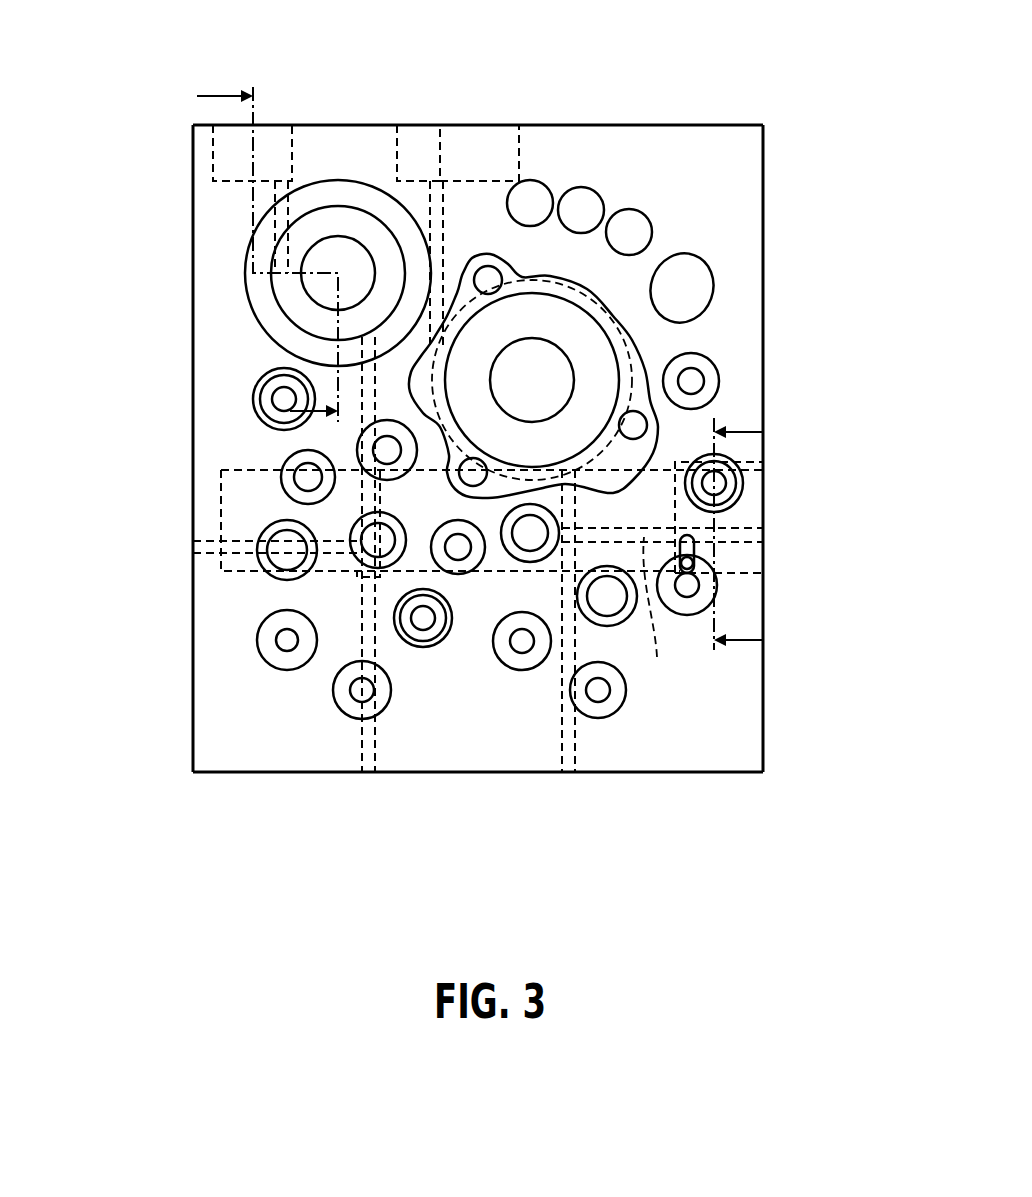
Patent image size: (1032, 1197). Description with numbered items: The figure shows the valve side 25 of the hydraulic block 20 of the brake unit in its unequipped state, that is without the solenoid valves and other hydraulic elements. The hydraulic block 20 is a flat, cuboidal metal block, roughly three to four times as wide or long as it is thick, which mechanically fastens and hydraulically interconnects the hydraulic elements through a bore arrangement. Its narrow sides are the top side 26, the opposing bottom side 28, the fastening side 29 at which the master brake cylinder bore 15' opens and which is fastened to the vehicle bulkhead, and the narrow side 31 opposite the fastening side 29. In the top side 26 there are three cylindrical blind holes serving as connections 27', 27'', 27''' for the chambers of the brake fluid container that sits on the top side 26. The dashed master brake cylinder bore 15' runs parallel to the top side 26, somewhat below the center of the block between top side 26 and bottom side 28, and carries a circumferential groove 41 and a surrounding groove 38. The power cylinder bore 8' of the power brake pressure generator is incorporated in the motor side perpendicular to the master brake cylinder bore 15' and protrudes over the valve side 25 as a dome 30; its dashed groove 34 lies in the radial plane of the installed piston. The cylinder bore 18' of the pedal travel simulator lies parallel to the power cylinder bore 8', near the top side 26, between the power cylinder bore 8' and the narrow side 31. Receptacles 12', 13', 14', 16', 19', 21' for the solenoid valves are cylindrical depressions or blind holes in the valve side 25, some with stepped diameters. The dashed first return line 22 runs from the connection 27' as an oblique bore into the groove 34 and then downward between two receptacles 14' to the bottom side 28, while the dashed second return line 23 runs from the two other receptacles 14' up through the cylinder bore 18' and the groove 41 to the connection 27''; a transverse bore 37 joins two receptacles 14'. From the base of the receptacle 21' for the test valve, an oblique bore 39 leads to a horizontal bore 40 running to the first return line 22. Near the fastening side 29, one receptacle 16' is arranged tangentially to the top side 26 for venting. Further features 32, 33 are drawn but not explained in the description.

The hydraulic block 20 is at (471, 449).
The valve side 25 is at (475, 452).
The top side 26 is at (693, 113).
The bottom side 28 is at (467, 775).
The fastening side 29 is at (773, 202).
The narrow side 31 is at (188, 335).
The connection 27' is at (408, 103).
The connection 27'' is at (253, 105).
The connection 27''' is at (488, 103).
The second return line 23 is at (257, 222).
The first return line 22 is at (447, 237).
The transverse bore 37 is at (335, 545).
The groove 38 is at (703, 510).
The oblique bore 39 is at (703, 550).
The master brake cylinder bore 15' is at (767, 515).
The circumferential groove 41 is at (370, 495).
The horizontal bore 40 is at (655, 616).
The cylinder bore 18' is at (282, 273).
The power cylinder bore 8' is at (627, 376).
The dome 30 is at (595, 345).
The groove 34 is at (517, 278).
The fastening holes 32 is at (629, 223).
The opening 33 is at (687, 283).
The receptacle 12' is at (488, 428).
The receptacle 19' is at (220, 399).
The receptacle 16' is at (622, 573).
The receptacle 14' is at (460, 566).
The receptacle 21' is at (751, 579).
The receptacle 13' is at (441, 680).